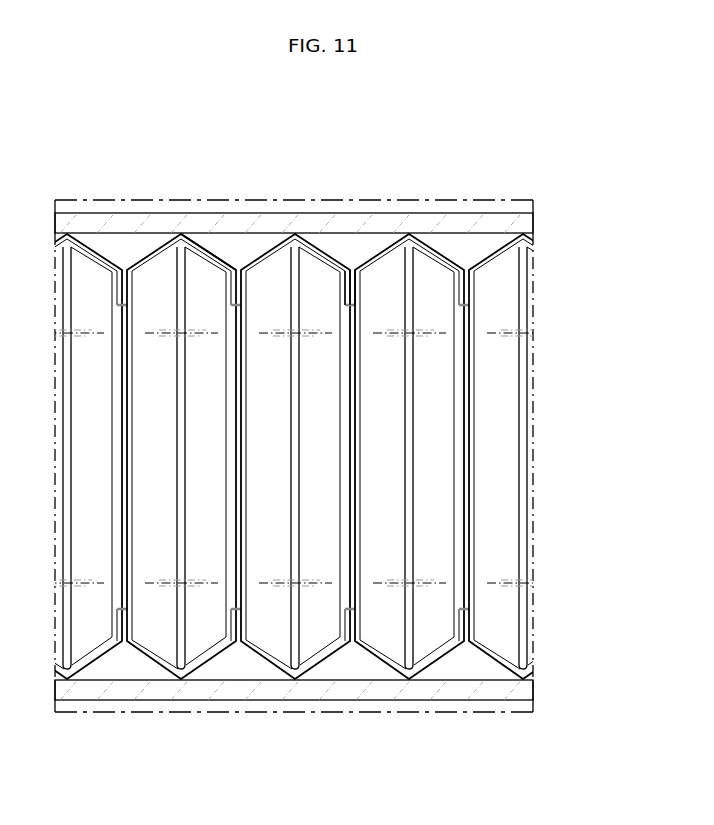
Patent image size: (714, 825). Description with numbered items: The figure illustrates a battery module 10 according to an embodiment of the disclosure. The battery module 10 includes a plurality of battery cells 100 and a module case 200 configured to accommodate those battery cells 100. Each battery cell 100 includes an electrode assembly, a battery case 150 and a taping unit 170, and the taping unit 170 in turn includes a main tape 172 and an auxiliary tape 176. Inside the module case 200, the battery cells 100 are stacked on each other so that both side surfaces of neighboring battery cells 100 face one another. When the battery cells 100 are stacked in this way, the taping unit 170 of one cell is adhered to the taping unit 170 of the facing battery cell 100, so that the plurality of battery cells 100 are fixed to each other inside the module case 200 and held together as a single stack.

The battery module 10 is at (106, 147).
The battery cell 100 is at (533, 443).
The battery case 150 is at (158, 632).
The taping unit 170 is at (241, 650).
The main tape 172 is at (352, 335).
The auxiliary tape 176 is at (211, 252).
The module case 200 is at (472, 218).